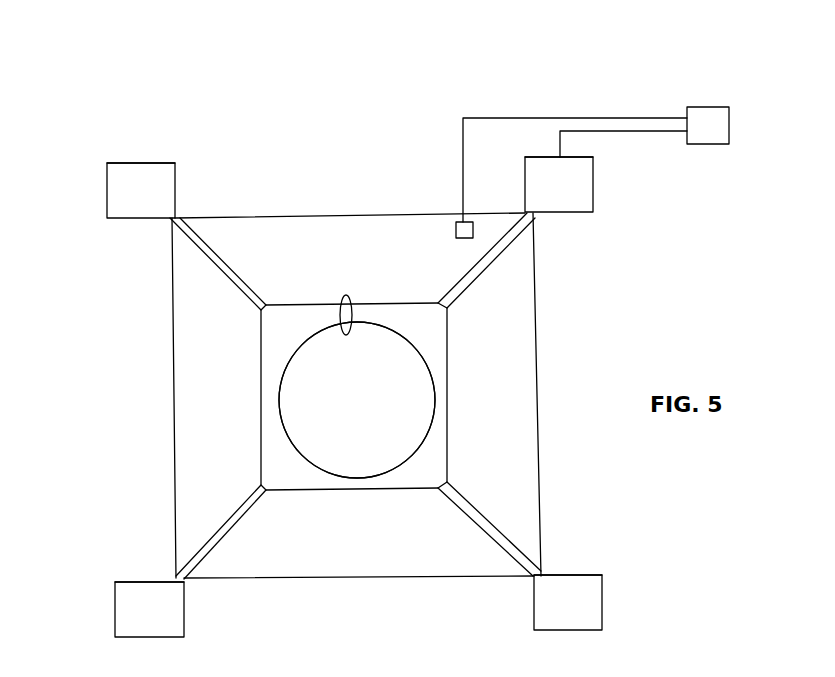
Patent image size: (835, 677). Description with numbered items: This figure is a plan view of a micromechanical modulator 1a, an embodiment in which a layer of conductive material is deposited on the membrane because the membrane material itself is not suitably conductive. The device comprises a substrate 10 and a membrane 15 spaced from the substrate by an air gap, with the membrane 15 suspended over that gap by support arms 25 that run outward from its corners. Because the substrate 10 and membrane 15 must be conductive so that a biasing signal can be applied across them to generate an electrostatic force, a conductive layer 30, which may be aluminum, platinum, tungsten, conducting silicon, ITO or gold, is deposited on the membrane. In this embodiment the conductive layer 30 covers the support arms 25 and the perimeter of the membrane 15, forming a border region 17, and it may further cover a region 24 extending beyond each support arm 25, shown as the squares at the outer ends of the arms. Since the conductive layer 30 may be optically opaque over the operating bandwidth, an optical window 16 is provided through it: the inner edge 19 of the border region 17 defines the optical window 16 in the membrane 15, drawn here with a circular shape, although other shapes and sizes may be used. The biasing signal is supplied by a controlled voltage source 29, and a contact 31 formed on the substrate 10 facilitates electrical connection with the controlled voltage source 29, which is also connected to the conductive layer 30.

The micromechanical modulator 1a is at (80, 98).
The substrate 10 is at (342, 560).
The membrane 15 is at (435, 342).
The optical window 16 is at (302, 387).
The border region 17 is at (346, 295).
The inner edge 19 is at (433, 385).
The region 24 is at (138, 163).
The support arms 25 is at (222, 263).
The controlled voltage source 29 is at (707, 107).
The conductive layer 30 is at (120, 190).
The contact 31 is at (456, 230).